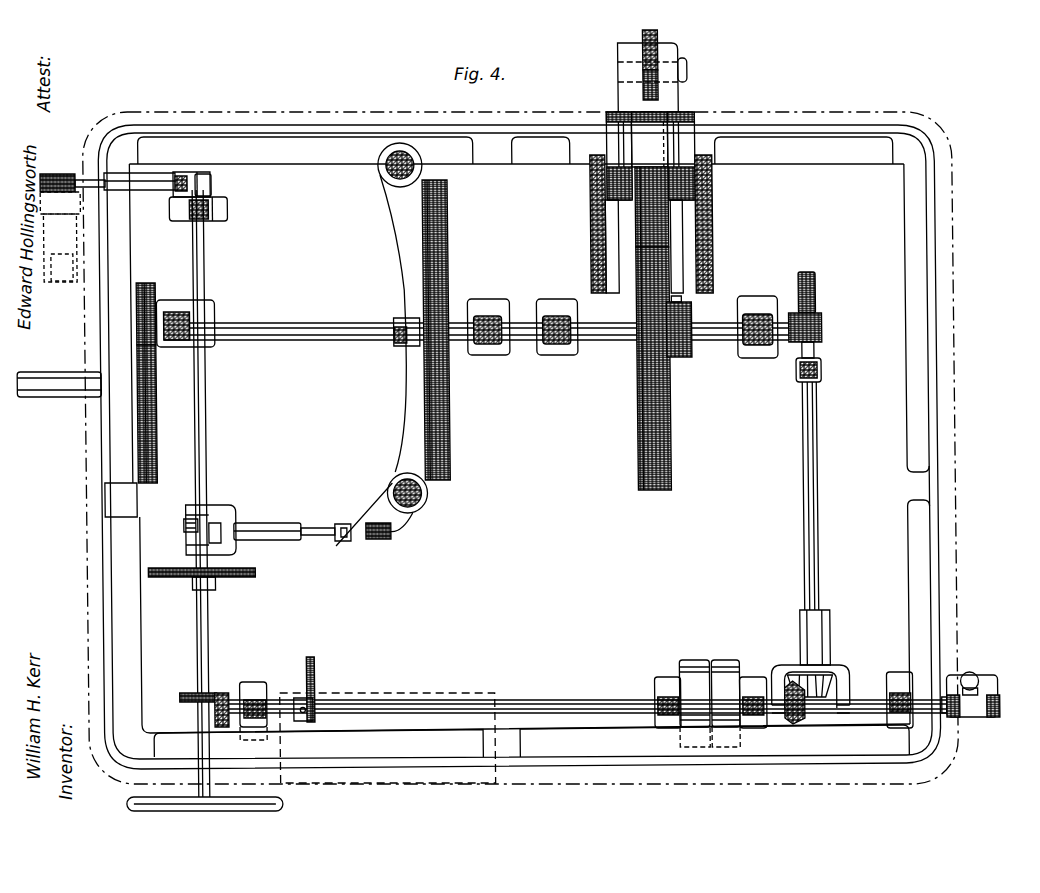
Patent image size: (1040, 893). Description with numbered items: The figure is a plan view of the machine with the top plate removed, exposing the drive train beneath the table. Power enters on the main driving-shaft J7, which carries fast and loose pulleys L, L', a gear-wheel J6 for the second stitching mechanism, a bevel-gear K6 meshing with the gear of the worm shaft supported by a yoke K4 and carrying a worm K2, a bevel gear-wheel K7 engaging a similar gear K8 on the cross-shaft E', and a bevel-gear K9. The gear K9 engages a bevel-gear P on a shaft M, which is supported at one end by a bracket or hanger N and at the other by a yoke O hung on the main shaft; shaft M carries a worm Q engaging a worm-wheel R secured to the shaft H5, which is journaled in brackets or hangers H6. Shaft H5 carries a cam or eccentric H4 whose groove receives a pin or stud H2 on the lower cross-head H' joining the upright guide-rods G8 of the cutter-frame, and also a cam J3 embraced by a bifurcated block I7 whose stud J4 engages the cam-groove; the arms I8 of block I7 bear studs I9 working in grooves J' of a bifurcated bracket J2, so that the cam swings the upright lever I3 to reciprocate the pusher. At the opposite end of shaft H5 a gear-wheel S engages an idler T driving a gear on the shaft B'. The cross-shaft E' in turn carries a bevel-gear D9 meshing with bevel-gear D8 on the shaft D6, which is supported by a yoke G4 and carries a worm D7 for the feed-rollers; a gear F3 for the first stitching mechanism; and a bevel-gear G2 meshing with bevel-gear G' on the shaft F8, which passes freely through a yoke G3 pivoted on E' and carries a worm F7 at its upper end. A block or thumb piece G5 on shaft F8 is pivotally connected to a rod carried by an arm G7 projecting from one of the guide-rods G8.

The worm D7 is at (50, 173).
The shaft D6 is at (80, 176).
The bevel-gear D8 is at (185, 173).
The bevel-gear D9 is at (213, 175).
The yoke G4 is at (158, 190).
The cross-shaft E' is at (201, 500).
The gear-wheel S is at (148, 283).
The idler T is at (155, 383).
The shaft B' is at (59, 373).
The shaft H5 is at (256, 326).
The brackets or hangers H6 is at (175, 310).
The pin or stud H2 is at (401, 347).
The cam or eccentric H4 is at (450, 447).
The cross-head H' is at (396, 323).
The upright guide-rods G8 is at (392, 168).
The arm G7 is at (366, 512).
The block or thumb piece G5 is at (335, 545).
The worm F7 is at (378, 541).
The shaft F8 is at (312, 523).
The yoke G3 is at (262, 541).
The bevel-gear G' is at (228, 526).
The bevel-gear G2 is at (177, 530).
The gear F3 is at (254, 578).
The upright lever I3 is at (663, 43).
The bifurcated block I7 is at (672, 99).
The arms I8 is at (675, 137).
The stud I9 is at (592, 190).
The bifurcated bracket J2 is at (592, 214).
The grooves J' is at (626, 246).
The stud J4 is at (652, 215).
The cam J3 is at (660, 328).
The worm-wheel R is at (815, 292).
The worm Q is at (824, 343).
The bracket or hanger N is at (823, 373).
The shaft M is at (818, 480).
The yoke O is at (812, 661).
The bevel-gear P is at (835, 685).
The bevel-gear K9 is at (796, 725).
The fast pulley L is at (694, 693).
The loose pulley L' is at (725, 693).
The main driving-shaft J7 is at (452, 706).
The gear-wheel J6 is at (313, 682).
The bevel-gear K8 is at (177, 700).
The bevel gear-wheel K7 is at (218, 728).
The yoke K4 is at (996, 680).
The worm K2 is at (968, 672).
The bevel-gear K6 is at (982, 718).